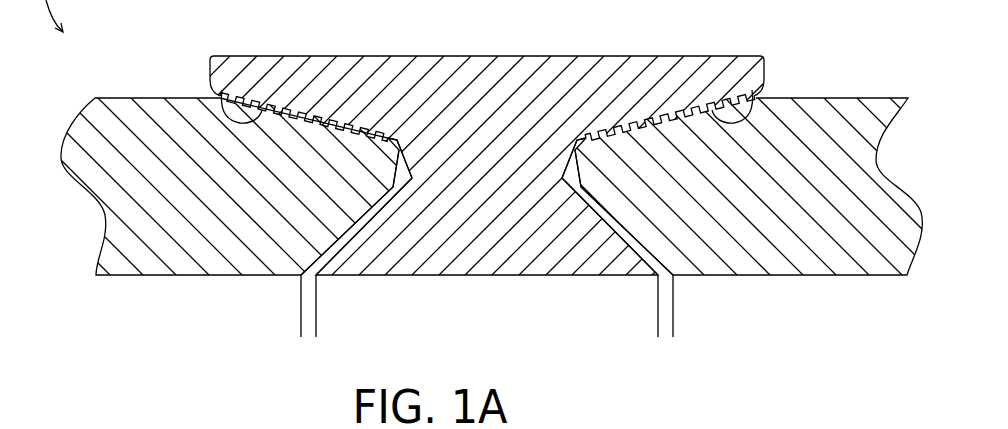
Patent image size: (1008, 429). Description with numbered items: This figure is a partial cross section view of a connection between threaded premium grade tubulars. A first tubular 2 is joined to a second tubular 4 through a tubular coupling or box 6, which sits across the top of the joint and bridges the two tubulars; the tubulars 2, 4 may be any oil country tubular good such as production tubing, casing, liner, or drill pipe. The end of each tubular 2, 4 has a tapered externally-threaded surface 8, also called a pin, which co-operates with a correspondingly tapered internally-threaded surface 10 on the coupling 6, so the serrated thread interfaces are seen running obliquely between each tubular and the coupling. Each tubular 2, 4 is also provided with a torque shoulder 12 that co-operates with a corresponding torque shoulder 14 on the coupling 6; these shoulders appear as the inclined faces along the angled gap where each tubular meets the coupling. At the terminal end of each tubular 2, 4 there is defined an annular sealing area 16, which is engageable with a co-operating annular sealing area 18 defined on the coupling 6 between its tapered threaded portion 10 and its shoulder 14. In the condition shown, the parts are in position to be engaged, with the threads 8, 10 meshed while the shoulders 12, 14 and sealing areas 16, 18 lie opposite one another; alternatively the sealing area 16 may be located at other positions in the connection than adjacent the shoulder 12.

The first tubular 2 is at (132, 98).
The second tubular 4 is at (868, 98).
The tubular coupling 6 is at (480, 56).
The tapered externally-threaded surface 8 is at (747, 93).
The tapered internally-threaded surface 10 is at (678, 113).
The torque shoulder 12 is at (632, 246).
The torque shoulder 14 is at (600, 213).
The annular sealing area 16 is at (577, 158).
The annular sealing area 18 is at (584, 140).